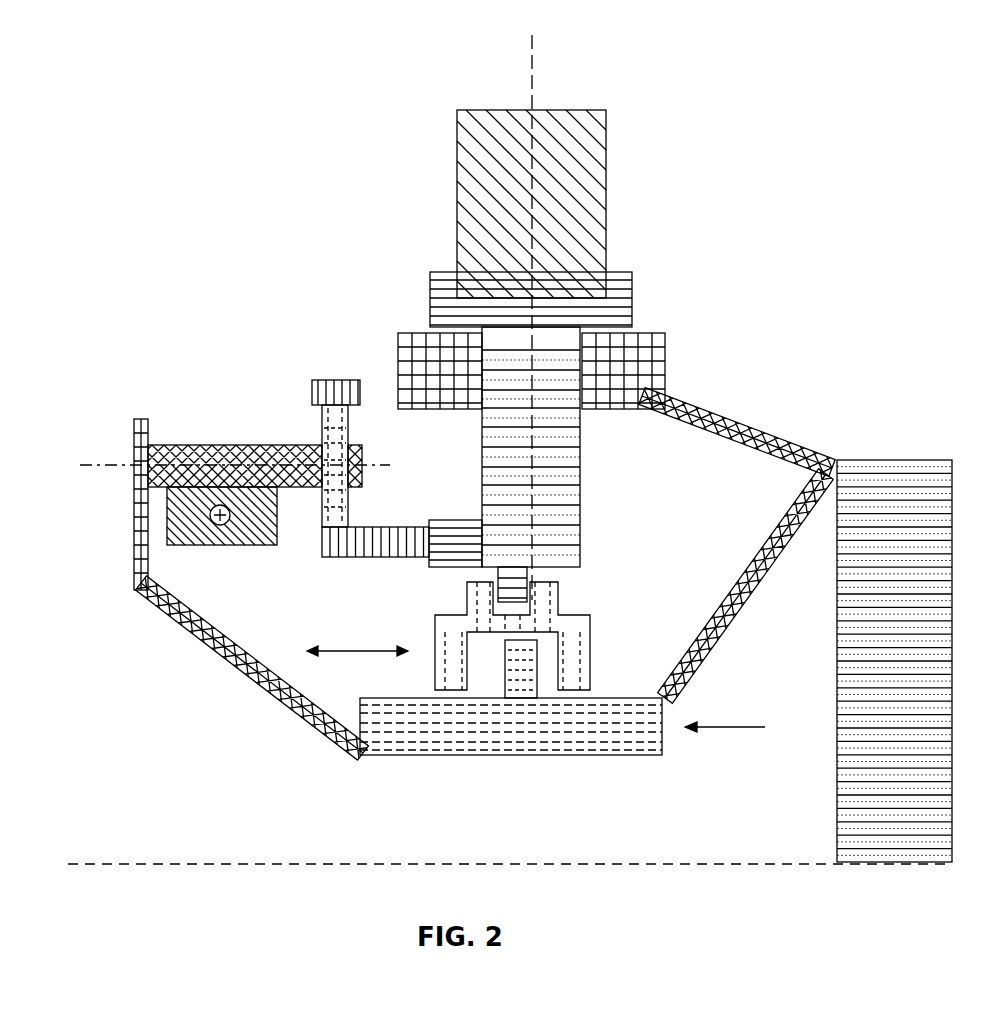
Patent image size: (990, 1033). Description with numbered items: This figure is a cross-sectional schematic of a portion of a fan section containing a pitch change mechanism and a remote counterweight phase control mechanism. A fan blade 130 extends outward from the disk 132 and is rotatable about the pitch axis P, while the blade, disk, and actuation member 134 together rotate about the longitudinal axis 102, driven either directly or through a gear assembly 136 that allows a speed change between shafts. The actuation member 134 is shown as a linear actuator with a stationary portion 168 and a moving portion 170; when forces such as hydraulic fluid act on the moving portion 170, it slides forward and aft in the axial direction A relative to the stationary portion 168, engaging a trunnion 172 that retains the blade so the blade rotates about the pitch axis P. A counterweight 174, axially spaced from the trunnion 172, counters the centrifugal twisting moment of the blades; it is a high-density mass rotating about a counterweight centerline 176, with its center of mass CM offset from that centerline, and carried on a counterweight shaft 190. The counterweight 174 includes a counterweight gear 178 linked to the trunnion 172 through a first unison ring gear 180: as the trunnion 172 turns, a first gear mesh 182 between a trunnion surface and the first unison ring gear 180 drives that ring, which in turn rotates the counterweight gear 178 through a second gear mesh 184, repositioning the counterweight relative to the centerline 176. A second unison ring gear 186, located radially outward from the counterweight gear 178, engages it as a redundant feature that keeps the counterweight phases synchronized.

The longitudinal axis 102 is at (170, 863).
The fan blade 130 is at (607, 200).
The disk 132 is at (667, 362).
The actuation member 134 is at (419, 766).
The gear assembly 136 is at (885, 459).
The stationary portion 168 is at (640, 735).
The moving portion 170 is at (592, 658).
The trunnion 172 is at (583, 500).
The counterweight 174 is at (185, 497).
The counterweight centerline 176 is at (92, 468).
The counterweight gear 178 is at (322, 415).
The first unison ring gear 180 is at (370, 543).
The first gear mesh 182 is at (430, 540).
The second gear mesh 184 is at (330, 520).
The second unison ring gear 186 is at (330, 390).
The counterweight shaft 190 is at (200, 458).
The center of mass CM is at (209, 517).
The axial direction A is at (373, 651).
The pitch axis P is at (531, 62).